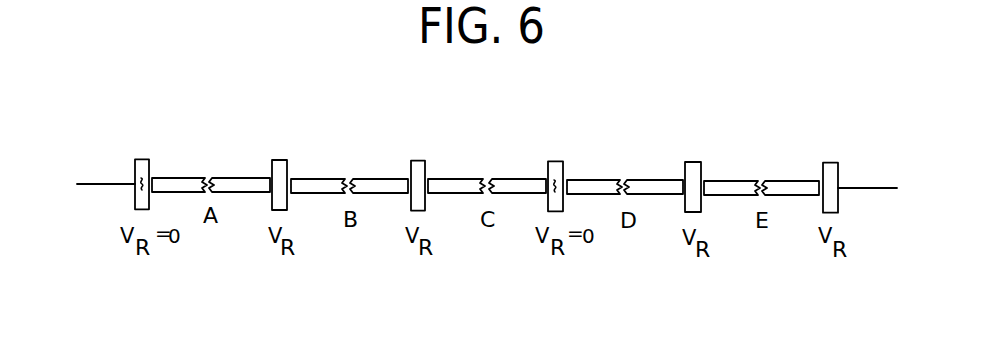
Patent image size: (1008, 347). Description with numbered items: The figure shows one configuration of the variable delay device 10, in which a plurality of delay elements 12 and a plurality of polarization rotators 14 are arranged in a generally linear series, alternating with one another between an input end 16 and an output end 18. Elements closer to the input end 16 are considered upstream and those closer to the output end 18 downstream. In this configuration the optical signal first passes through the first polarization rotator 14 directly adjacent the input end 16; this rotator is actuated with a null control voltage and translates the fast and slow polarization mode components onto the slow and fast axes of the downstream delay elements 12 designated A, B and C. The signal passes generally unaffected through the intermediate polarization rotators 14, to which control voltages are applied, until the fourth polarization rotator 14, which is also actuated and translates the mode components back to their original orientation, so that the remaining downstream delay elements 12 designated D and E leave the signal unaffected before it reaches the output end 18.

The variable delay device 10 is at (655, 265).
The delay element 12 is at (785, 188).
The polarization rotator 14 is at (830, 197).
The input end 16 is at (110, 188).
The output end 18 is at (863, 187).